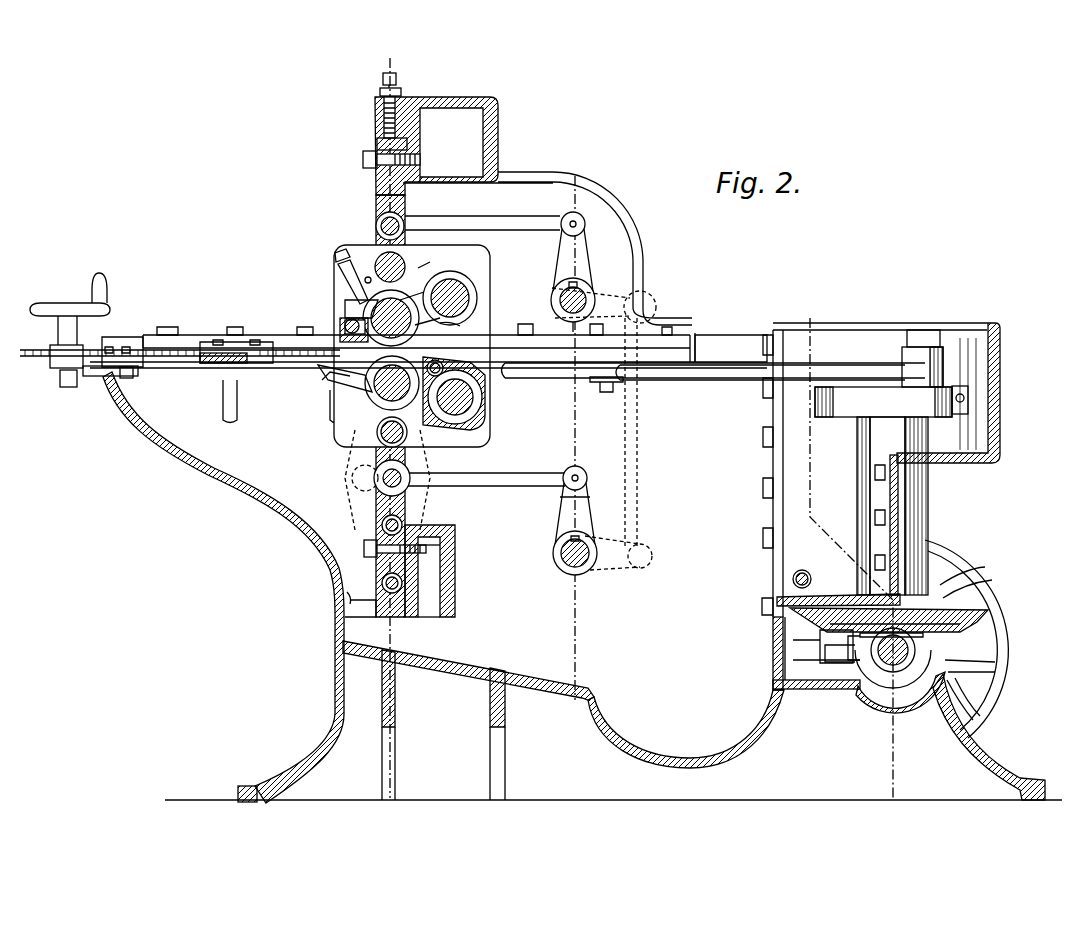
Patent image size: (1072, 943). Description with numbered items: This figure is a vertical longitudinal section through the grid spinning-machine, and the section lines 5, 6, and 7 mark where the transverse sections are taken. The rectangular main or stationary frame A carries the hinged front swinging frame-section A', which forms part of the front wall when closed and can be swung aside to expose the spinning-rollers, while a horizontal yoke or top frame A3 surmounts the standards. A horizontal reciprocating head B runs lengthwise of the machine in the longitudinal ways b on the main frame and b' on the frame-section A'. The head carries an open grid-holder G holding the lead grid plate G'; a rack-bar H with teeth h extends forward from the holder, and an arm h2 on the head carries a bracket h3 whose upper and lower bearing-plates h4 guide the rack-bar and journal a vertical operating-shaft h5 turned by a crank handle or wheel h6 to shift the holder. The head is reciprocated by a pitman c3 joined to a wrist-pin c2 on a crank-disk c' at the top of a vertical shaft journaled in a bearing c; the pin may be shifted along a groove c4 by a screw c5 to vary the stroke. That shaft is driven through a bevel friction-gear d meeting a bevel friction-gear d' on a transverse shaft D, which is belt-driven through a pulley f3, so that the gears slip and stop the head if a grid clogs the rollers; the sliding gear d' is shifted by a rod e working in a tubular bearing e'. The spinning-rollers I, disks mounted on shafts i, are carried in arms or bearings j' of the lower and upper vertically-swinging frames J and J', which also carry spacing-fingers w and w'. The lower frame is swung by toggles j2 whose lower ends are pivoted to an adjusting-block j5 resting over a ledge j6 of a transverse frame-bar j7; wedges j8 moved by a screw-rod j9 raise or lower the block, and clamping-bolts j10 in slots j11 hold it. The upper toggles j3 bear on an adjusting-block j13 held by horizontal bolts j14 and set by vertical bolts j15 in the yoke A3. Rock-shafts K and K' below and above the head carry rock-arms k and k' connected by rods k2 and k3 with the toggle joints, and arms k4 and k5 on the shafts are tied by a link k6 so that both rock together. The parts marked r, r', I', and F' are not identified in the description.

The main or stationary frame A is at (694, 561).
The front swinging frame-section A' is at (223, 587).
The horizontal yoke or top frame A3 is at (498, 128).
The section line 5 5 is at (399, 433).
The section line 6 6 is at (547, 437).
The section line 7 7 is at (856, 563).
The vertical bolts j15 is at (386, 118).
The adjusting-block j13 is at (377, 144).
The horizontal bolts j14 is at (422, 160).
The upper toggles j3 is at (404, 222).
The links or rods k3 is at (482, 212).
The rock-arms k' is at (573, 267).
The upper rock-shaft K' is at (554, 304).
The arm k5 is at (630, 300).
The link or rod k6 is at (649, 443).
The links or rods k2 is at (482, 465).
The rock-arms k is at (575, 520).
The lower rock-shaft K is at (558, 551).
The arm k4 is at (612, 564).
The upper swinging frame J' is at (412, 346).
The arms or bearings j' is at (438, 289).
The roller shaft i is at (438, 330).
The screw r is at (333, 276).
The spinning-rollers I is at (338, 303).
The spacing-finger w is at (334, 326).
The lower feed roll I' is at (359, 388).
The screw r' is at (311, 387).
The lower roller F' is at (468, 394).
The spacing-finger w' is at (470, 379).
The lower swinging frame J is at (397, 432).
The lead grid plate G' is at (712, 343).
The lower toggles j2 is at (412, 490).
The adjusting-block j5 is at (378, 560).
The clamping-bolts j10 is at (428, 542).
The transverse frame-bar j7 is at (456, 552).
The slots j11 is at (440, 562).
The wedges j8 is at (378, 578).
The screw-threaded transverse rod j9 is at (370, 600).
The ledge or shelf j6 is at (355, 603).
The longitudinal ways b is at (428, 358).
The longitudinal ways b' is at (416, 329).
The rack-bar H is at (282, 340).
The reciprocating head B is at (215, 364).
The teeth h is at (40, 357).
The crank handle or wheel h6 is at (70, 294).
The vertical operating-shaft h5 is at (58, 330).
The bearing-plates h4 is at (60, 375).
The bracket h3 is at (95, 375).
The arm h2 is at (165, 368).
The grid-holder G is at (676, 369).
The pitman c3 is at (826, 370).
The wrist-pin c2 is at (925, 330).
The crank-disk c' is at (883, 402).
The screw c5 is at (965, 398).
The groove c4 is at (958, 412).
The bearing c is at (882, 506).
The transverse horizontal rod e is at (814, 578).
The tubular bearing e' is at (805, 559).
The bevel friction-gear d is at (891, 594).
The bevel friction-gear d' is at (901, 677).
The transverse shaft D is at (885, 660).
The belt-pulley f3 is at (1002, 704).